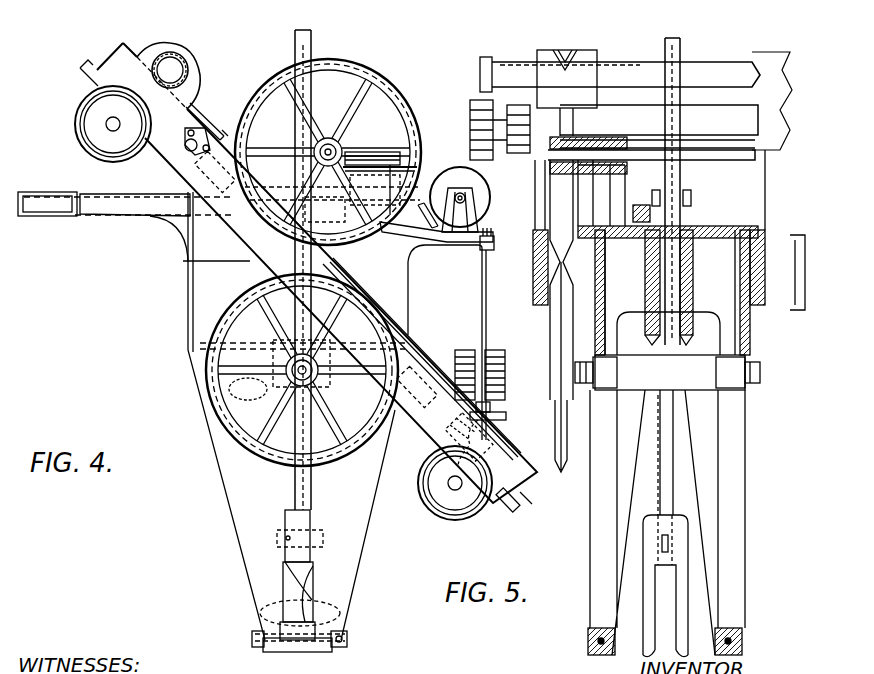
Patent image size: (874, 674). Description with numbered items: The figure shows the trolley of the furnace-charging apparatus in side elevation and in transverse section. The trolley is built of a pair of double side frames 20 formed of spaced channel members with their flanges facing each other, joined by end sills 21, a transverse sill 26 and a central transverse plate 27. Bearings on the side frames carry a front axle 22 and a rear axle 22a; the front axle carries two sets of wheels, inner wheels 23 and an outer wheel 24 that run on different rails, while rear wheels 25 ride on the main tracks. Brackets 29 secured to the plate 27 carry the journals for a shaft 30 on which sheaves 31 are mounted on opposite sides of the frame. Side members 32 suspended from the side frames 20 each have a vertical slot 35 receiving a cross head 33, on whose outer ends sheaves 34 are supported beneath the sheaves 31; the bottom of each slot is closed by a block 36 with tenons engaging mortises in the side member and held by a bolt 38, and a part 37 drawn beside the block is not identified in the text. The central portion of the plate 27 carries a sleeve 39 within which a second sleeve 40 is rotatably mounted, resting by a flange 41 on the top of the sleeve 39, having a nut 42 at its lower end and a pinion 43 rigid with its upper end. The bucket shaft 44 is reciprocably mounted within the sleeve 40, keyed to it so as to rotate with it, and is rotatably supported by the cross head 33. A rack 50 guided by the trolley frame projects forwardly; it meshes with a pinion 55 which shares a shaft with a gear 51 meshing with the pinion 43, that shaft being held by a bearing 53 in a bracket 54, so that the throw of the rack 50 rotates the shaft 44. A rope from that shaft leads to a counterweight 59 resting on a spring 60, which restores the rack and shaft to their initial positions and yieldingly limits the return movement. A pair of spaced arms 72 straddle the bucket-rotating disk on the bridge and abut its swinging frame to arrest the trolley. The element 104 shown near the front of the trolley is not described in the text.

In FIG. 4, the side frames 20 is at (255, 242).
In FIG. 5, the side frames 20 is at (535, 272).
In FIG. 4, the end sills 21 is at (100, 64).
In FIG. 4, the front axle 22 is at (110, 125).
In FIG. 4, the rear axle 22a is at (455, 487).
In FIG. 5, the inner wheels 23 is at (517, 63).
In FIG. 4, the outer wheel 24 is at (119, 148).
In FIG. 5, the outer wheel 24 is at (478, 112).
In FIG. 4, the rear wheels 25 is at (463, 520).
In FIG. 4, the transverse sill 26 is at (197, 114).
In FIG. 4, the central transverse plate 27 is at (401, 327).
In FIG. 5, the central transverse plate 27 is at (745, 236).
In FIG. 4, the brackets 29 is at (321, 138).
In FIG. 4, the shaft 30 is at (346, 147).
In FIG. 5, the shaft 30 is at (618, 156).
In FIG. 4, the sheaves 31 is at (372, 76).
In FIG. 5, the sheaves 31 is at (573, 68).
In FIG. 4, the side members 32 is at (234, 480).
In FIG. 5, the side members 32 is at (600, 495).
In FIG. 4, the cross head 33 is at (274, 373).
In FIG. 5, the cross head 33 is at (667, 372).
In FIG. 4, the sheaves 34 is at (206, 361).
In FIG. 5, the sheaves 34 is at (554, 358).
In FIG. 4, the vertical slots 35 is at (310, 494).
In FIG. 4, the block 36 is at (299, 651).
In FIG. 5, the block 36 is at (615, 648).
In FIG. 4, the cam 37 is at (313, 630).
In FIG. 4, the bolt 38 is at (347, 644).
In FIG. 5, the bolt 38 is at (590, 636).
In FIG. 5, the sleeve 39 is at (694, 294).
In FIG. 5, the sleeve 40 is at (687, 212).
In FIG. 5, the flange 41 is at (688, 226).
In FIG. 5, the nut 42 is at (680, 329).
In FIG. 5, the pinion 43 is at (687, 195).
In FIG. 4, the bucket shaft 44 is at (299, 54).
In FIG. 5, the bucket shaft 44 is at (681, 45).
In FIG. 4, the rack 50 is at (32, 217).
In FIG. 5, the rack 50 is at (642, 204).
In FIG. 4, the gear 51 is at (442, 204).
In FIG. 4, the bearing 53 is at (417, 252).
In FIG. 4, the bracket 54 is at (430, 231).
In FIG. 4, the pinion 55 is at (426, 180).
In FIG. 4, the counterweight 59 is at (503, 354).
In FIG. 4, the spring 60 is at (490, 418).
In FIG. 4, the arms 72 is at (153, 217).
In FIG. 4, the roller 104 is at (170, 70).